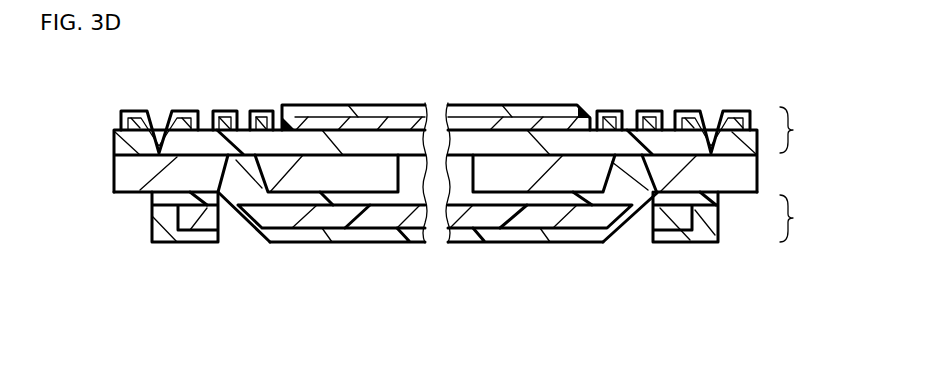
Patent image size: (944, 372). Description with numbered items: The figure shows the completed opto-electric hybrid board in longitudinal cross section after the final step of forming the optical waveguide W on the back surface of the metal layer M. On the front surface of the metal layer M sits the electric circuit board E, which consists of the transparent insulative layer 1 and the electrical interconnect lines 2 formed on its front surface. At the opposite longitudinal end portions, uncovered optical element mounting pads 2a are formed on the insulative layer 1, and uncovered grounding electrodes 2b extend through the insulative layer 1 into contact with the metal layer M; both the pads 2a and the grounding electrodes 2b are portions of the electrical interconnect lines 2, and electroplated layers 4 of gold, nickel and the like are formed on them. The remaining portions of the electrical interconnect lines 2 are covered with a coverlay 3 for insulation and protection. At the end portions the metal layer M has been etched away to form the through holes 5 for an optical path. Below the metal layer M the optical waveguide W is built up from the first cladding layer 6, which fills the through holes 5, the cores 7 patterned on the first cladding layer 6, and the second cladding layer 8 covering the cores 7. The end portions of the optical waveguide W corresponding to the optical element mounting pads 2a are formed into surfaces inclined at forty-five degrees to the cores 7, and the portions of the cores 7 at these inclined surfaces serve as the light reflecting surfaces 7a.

The insulative layer 1 is at (360, 143).
The electrical interconnect lines 2 is at (475, 122).
The optical element mounting pads 2a is at (262, 122).
The grounding electrodes 2b is at (132, 115).
The coverlay 3 is at (530, 110).
The electroplated layers 4 is at (224, 121).
The through holes for an optical path 5 is at (680, 262).
The first cladding layer 6 is at (473, 217).
The cores 7 is at (540, 217).
The light reflecting surfaces 7a is at (228, 222).
The second cladding layer 8 is at (590, 236).
The electric circuit board E is at (798, 130).
The metal layer M is at (745, 180).
The optical waveguide W is at (801, 218).